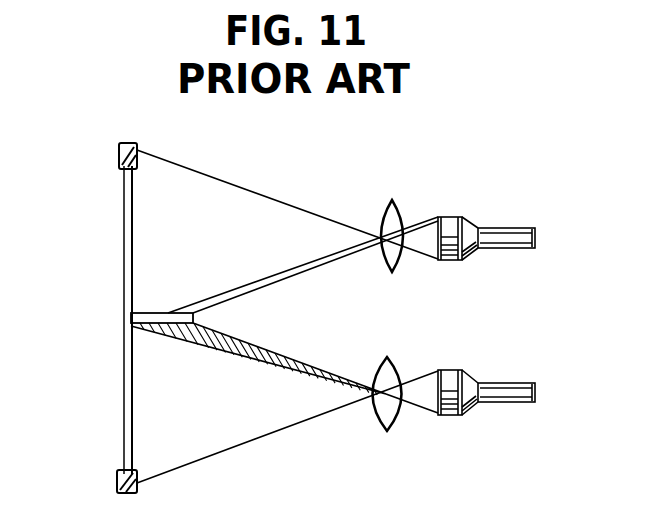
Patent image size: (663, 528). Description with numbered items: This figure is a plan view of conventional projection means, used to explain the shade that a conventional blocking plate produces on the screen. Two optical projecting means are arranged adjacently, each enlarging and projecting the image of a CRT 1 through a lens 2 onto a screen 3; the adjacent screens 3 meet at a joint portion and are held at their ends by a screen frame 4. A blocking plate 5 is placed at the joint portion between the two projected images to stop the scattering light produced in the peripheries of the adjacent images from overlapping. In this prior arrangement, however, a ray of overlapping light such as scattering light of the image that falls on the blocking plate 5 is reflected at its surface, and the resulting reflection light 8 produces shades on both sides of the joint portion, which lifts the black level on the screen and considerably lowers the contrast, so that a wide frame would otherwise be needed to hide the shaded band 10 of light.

The CRT 1 is at (480, 230).
The lens 2 is at (404, 209).
The screen 3 is at (124, 259).
The screen frame 4 is at (119, 152).
The blocking plate 5 is at (196, 322).
The reflection light 8 is at (136, 303).
The light beam 10 is at (243, 352).